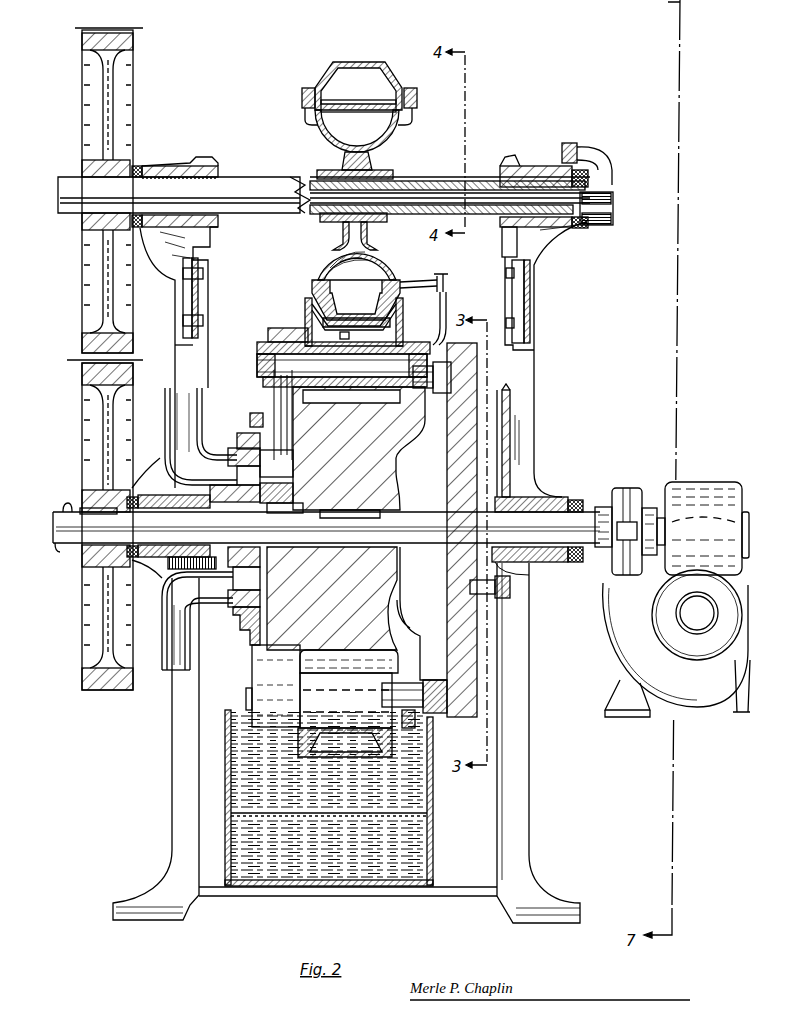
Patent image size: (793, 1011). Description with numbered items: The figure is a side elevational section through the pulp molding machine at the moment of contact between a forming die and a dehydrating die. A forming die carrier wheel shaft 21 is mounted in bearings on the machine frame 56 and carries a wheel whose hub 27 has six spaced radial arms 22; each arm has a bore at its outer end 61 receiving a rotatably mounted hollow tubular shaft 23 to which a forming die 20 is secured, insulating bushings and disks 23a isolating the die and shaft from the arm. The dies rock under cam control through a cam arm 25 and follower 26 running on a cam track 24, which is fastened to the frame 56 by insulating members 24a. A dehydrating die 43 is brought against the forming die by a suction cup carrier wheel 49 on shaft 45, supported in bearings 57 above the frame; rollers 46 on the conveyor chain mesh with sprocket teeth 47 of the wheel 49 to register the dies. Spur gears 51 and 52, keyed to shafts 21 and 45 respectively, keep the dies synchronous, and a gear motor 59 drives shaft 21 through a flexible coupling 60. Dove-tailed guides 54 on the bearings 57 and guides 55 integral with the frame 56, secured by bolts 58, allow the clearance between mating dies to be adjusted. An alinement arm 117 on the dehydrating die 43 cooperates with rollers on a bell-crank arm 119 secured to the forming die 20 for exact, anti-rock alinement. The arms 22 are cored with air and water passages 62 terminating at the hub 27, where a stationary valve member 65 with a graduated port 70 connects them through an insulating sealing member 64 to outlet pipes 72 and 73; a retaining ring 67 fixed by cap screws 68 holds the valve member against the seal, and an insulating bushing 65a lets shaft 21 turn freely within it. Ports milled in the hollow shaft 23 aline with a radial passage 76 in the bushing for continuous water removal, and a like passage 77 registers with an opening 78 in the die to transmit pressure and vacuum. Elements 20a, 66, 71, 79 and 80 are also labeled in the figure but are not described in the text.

The forming die 20 is at (306, 313).
The cup flange 20a is at (356, 333).
The forming die carrier wheel shaft 21 is at (55, 525).
The arms 22 is at (408, 633).
The tubular shaft member 23 is at (428, 362).
The insulating bushings and disks 23a is at (262, 346).
The cam track 24 is at (470, 695).
The insulating members 24a is at (505, 598).
The cam arm 25 is at (388, 733).
The follower 26 is at (420, 712).
The hub 27 is at (393, 492).
The dehydrating die 43 is at (314, 288).
The shaft 45 is at (58, 190).
The rollers 46 is at (417, 96).
The sprocket teeth 47 is at (414, 120).
The suction cup carrier wheel 49 is at (388, 142).
The spur gear 51 is at (78, 580).
The spur gear 52 is at (80, 233).
The dove-tailed guides 54 is at (518, 298).
The dove-tailed guides 55 is at (522, 310).
The machine frame 56 is at (534, 375).
The bearings 57 is at (560, 222).
The bolts 58 is at (516, 323).
The gear motor 59 is at (690, 484).
The flexible coupling 60 is at (628, 490).
The arm end 61 is at (270, 333).
The air and water passages 62 is at (290, 406).
The insulating sealing member 64 is at (280, 503).
The valve member 65 is at (235, 475).
The insulating bushing 65a is at (275, 513).
The packing 66 is at (175, 570).
The retaining ring 67 is at (238, 436).
The cap screws 68 is at (250, 419).
The tapered port 70 is at (260, 594).
The bushing 71 is at (270, 470).
The outlet pipe 72 is at (163, 655).
The outlet pipe 73 is at (168, 398).
The radial passage 76 is at (290, 367).
The passage 77 is at (360, 358).
The opening 78 is at (352, 352).
The tube 79 is at (418, 186).
The elbow 80 is at (604, 160).
The alinement arm 117 is at (415, 282).
The bell-crank arm 119 is at (447, 302).